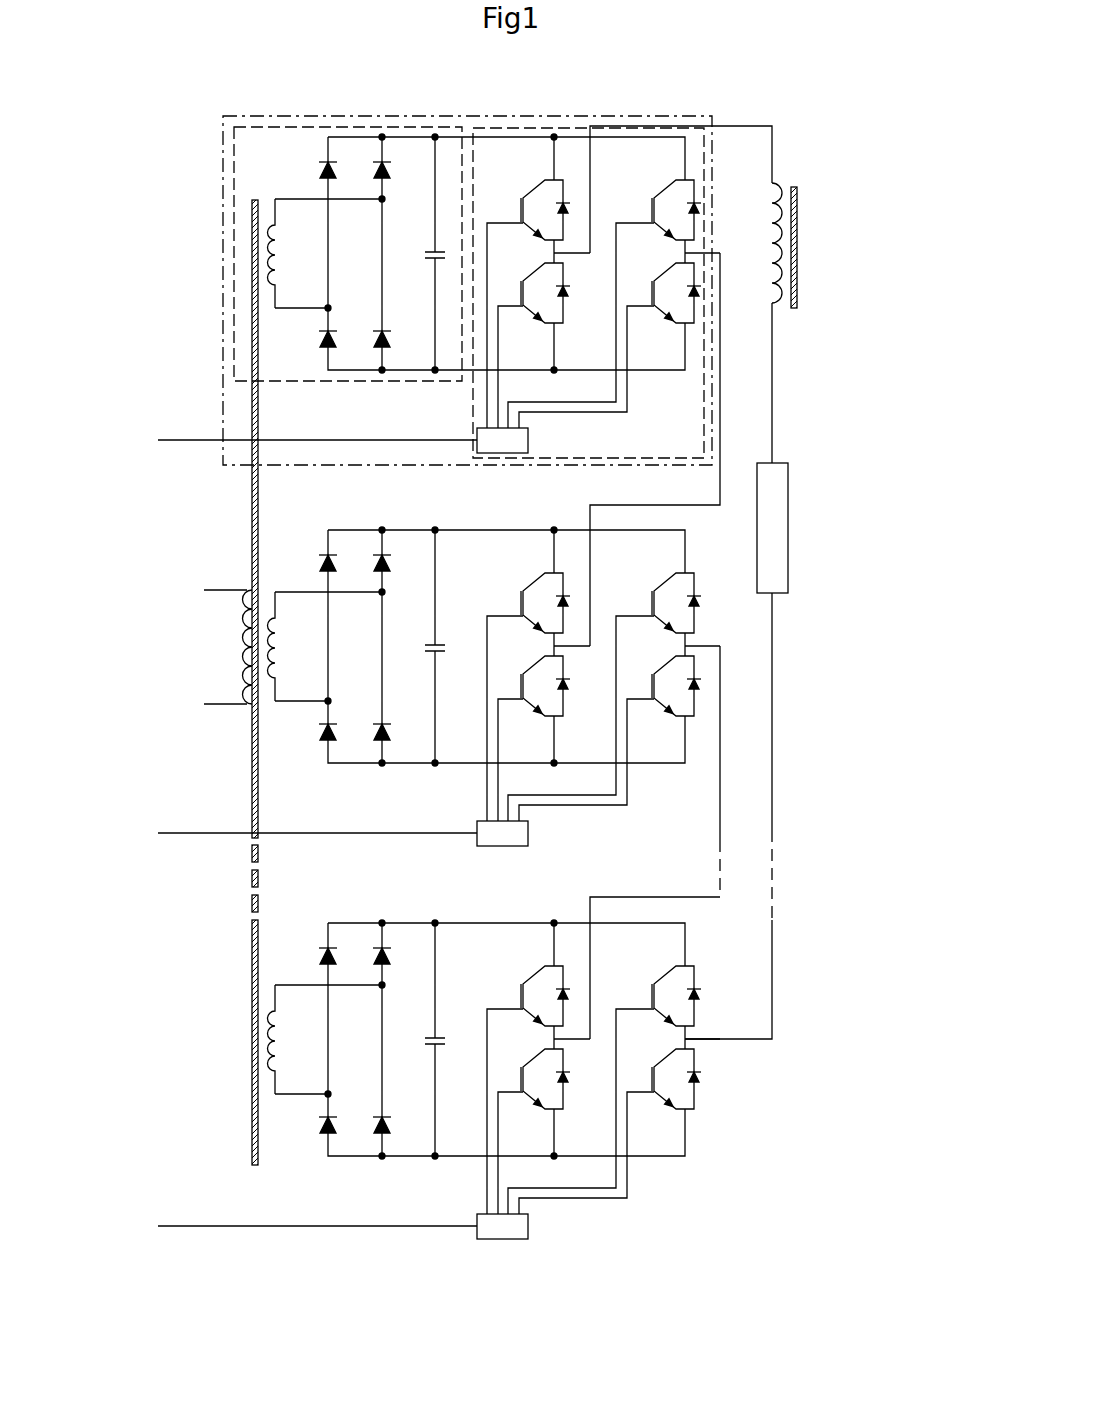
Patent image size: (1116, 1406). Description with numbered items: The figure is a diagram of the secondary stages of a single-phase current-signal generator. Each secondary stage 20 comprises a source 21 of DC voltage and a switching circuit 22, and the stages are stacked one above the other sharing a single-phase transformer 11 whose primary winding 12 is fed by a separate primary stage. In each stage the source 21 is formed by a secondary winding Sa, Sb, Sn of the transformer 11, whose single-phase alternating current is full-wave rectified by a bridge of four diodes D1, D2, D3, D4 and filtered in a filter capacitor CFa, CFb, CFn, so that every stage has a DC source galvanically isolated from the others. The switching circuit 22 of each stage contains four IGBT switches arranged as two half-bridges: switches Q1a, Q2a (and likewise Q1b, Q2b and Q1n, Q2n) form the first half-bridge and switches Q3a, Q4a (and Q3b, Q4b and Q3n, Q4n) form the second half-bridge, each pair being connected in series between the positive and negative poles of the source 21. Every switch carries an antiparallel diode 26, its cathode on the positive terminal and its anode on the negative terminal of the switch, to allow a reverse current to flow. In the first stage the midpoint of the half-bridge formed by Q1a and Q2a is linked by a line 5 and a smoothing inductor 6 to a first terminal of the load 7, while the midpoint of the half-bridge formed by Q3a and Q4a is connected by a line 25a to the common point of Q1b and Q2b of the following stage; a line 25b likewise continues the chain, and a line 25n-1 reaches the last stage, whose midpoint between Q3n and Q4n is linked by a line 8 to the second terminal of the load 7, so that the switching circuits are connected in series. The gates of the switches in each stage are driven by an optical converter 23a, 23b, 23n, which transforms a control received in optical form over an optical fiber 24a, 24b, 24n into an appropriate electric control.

The line 5 is at (745, 126).
The smoothing inductor 6 is at (780, 246).
The load 7 is at (780, 540).
The line 8 is at (735, 1040).
The single-phase transformer 11 is at (233, 888).
The primary winding 12 is at (237, 647).
The secondary stage 20 is at (470, 116).
The source of DC voltage 21 is at (415, 127).
The switching circuit 22 is at (540, 127).
The optical converter 23a is at (502, 440).
The optical converter 23b is at (502, 833).
The optical converter 23n is at (502, 1226).
The optical fiber 24a is at (178, 440).
The optical fiber 24b is at (178, 833).
The optical fiber 24n is at (178, 1226).
The line 25a is at (720, 410).
The line 25b is at (722, 683).
The line 25n-1 is at (693, 897).
The antiparallel diode 26 is at (698, 207).
The diode D1 is at (328, 160).
The diode D2 is at (328, 345).
The diode D3 is at (382, 160).
The diode D4 is at (382, 345).
The filter capacitor CFa is at (430, 252).
The filter capacitor CFb is at (430, 645).
The filter capacitor CFn is at (430, 1038).
The secondary winding Sa is at (268, 258).
The secondary winding Sb is at (268, 650).
The secondary winding Sn is at (268, 1042).
The switch Q1a is at (540, 193).
The switch Q2a is at (540, 313).
The switch Q3a is at (669, 193).
The switch Q4a is at (670, 313).
The switch Q1b is at (540, 586).
The switch Q2b is at (540, 706).
The switch Q3b is at (669, 586).
The switch Q4b is at (670, 706).
The switch Q1n is at (540, 979).
The switch Q2n is at (540, 1099).
The switch Q3n is at (669, 979).
The switch Q4n is at (670, 1099).